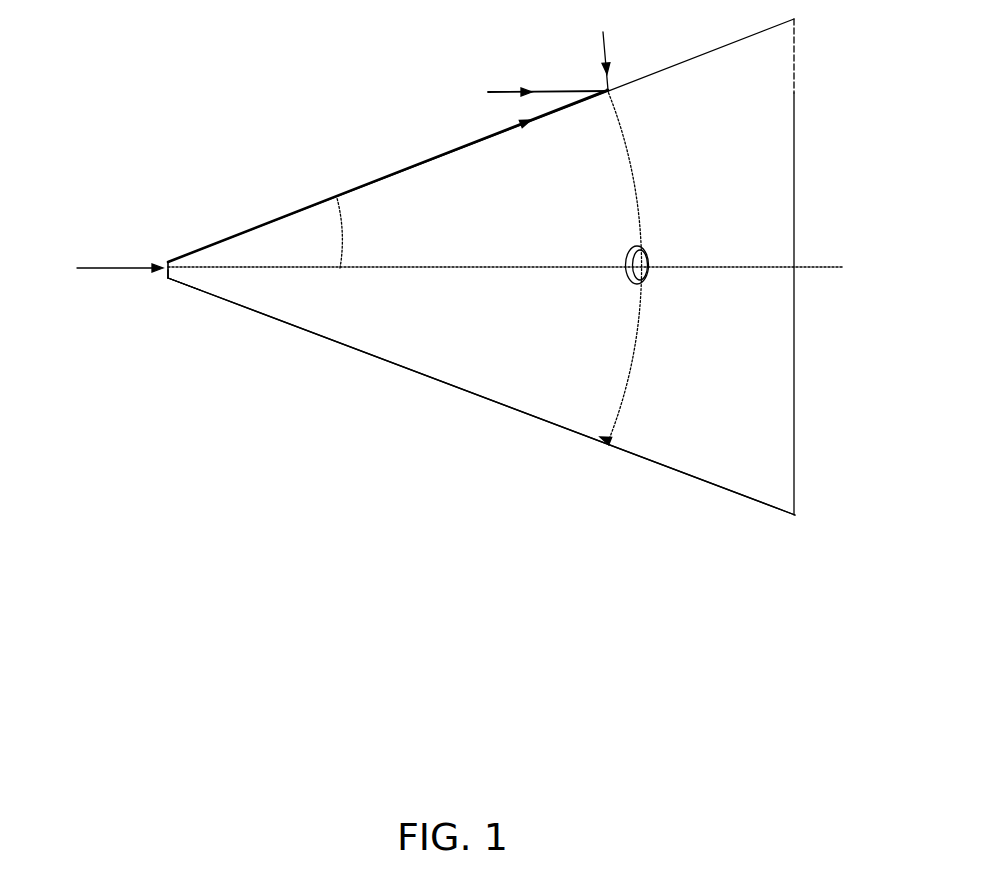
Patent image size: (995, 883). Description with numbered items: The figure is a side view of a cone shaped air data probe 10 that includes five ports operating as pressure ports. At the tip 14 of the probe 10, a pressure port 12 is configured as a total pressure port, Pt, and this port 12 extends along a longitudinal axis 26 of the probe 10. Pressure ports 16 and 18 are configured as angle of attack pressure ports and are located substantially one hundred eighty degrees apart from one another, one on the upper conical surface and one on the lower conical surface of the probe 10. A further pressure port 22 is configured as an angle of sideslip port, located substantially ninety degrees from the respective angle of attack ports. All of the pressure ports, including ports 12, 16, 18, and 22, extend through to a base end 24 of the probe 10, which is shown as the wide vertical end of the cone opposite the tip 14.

The cone shaped air data probe 10 is at (448, 493).
The pressure port 12 is at (162, 277).
The tip 14 is at (180, 282).
The pressure port 16 is at (613, 92).
The pressure port 18 is at (615, 443).
The pressure port 22 is at (648, 272).
The base end 24 is at (795, 152).
The longitudinal axis 26 is at (825, 267).